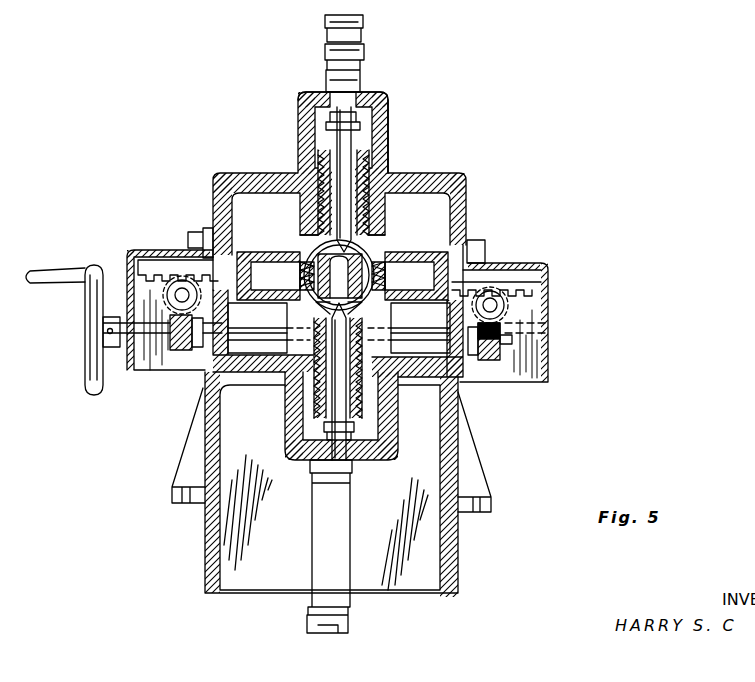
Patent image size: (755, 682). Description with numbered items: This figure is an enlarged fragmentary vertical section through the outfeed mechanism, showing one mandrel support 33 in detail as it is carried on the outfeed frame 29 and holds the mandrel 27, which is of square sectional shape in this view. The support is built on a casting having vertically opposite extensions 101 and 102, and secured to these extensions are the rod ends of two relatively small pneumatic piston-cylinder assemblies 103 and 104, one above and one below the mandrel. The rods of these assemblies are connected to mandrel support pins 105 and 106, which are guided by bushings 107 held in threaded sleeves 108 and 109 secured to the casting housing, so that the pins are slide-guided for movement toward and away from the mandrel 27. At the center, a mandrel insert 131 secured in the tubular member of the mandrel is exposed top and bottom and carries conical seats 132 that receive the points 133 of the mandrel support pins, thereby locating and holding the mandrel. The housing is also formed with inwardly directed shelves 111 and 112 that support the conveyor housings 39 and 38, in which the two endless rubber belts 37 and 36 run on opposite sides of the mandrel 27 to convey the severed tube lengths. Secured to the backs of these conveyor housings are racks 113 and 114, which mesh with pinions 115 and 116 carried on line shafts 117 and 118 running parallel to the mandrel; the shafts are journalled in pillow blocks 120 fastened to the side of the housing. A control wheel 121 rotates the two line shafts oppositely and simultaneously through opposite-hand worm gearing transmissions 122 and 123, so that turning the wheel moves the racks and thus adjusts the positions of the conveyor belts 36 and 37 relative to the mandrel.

The mandrel assembly 27 is at (360, 255).
The frame 29 is at (210, 540).
The mandrel support 33 is at (409, 126).
The endless rubber belt 36 is at (400, 255).
The endless rubber belt 37 is at (293, 252).
The elongated housing 38 is at (426, 255).
The elongated housing 39 is at (252, 255).
The extension 101 is at (388, 105).
The extension 102 is at (370, 452).
The pneumatic piston-cylinder assembly 103 is at (362, 62).
The pneumatic piston-cylinder assembly 104 is at (318, 515).
The mandrel support pin 105 is at (372, 158).
The mandrel support pin 106 is at (318, 418).
The bushing 107 is at (330, 170).
The threaded sleeve 108 is at (316, 185).
The threaded sleeve 109 is at (356, 380).
The shelf 111 is at (265, 300).
The shelf 112 is at (408, 303).
The rack 113 is at (150, 258).
The rack 114 is at (498, 285).
The pinion 115 is at (136, 290).
The pinion 116 is at (502, 304).
The line shaft 117 is at (181, 285).
The line shaft 118 is at (505, 295).
The pillow block 120 is at (548, 326).
The control wheel 121 is at (88, 382).
The worm gearing transmission 122 is at (186, 352).
The worm gearing transmission 123 is at (495, 362).
The mandrel insert 131 is at (365, 316).
The conical seat 132 is at (311, 316).
The point 133 is at (318, 228).